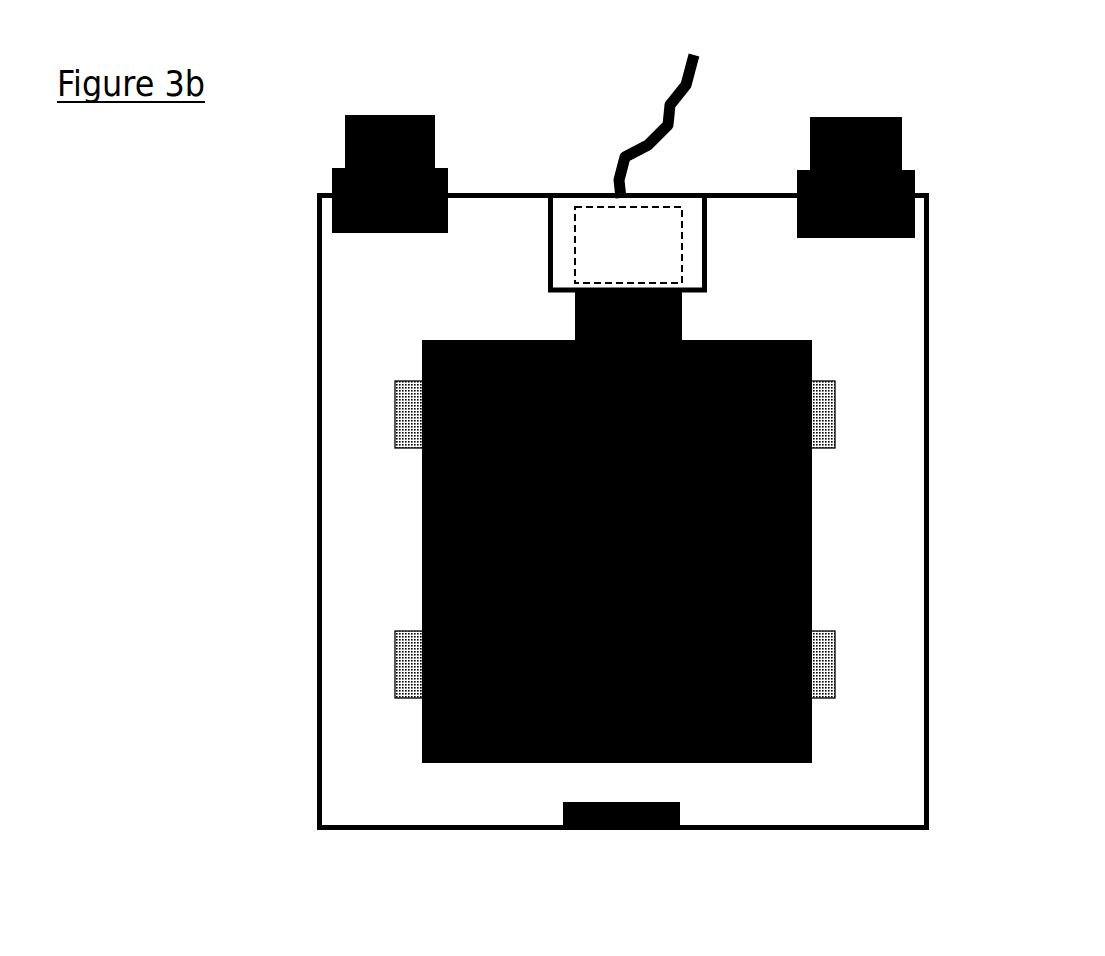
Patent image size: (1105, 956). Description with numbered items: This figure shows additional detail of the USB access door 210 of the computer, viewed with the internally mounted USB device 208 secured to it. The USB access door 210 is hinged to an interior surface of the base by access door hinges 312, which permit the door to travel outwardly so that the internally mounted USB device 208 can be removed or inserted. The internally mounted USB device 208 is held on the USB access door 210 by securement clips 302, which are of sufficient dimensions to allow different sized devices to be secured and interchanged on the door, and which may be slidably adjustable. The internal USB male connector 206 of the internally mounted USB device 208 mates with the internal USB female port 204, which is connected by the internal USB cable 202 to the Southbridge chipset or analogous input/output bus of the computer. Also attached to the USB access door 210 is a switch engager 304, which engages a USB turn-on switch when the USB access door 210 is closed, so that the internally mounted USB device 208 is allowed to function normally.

The internal Universal Serial Bus (USB) cable 202 is at (698, 55).
The internal USB female port 204 is at (557, 218).
The internal USB male connector 206 is at (645, 245).
The internally mounted USB device 208 is at (420, 588).
The USB access door 210 is at (930, 728).
The securement clips 302 is at (813, 683).
The switch engager 304 is at (638, 832).
The access door hinges 312 is at (875, 142).